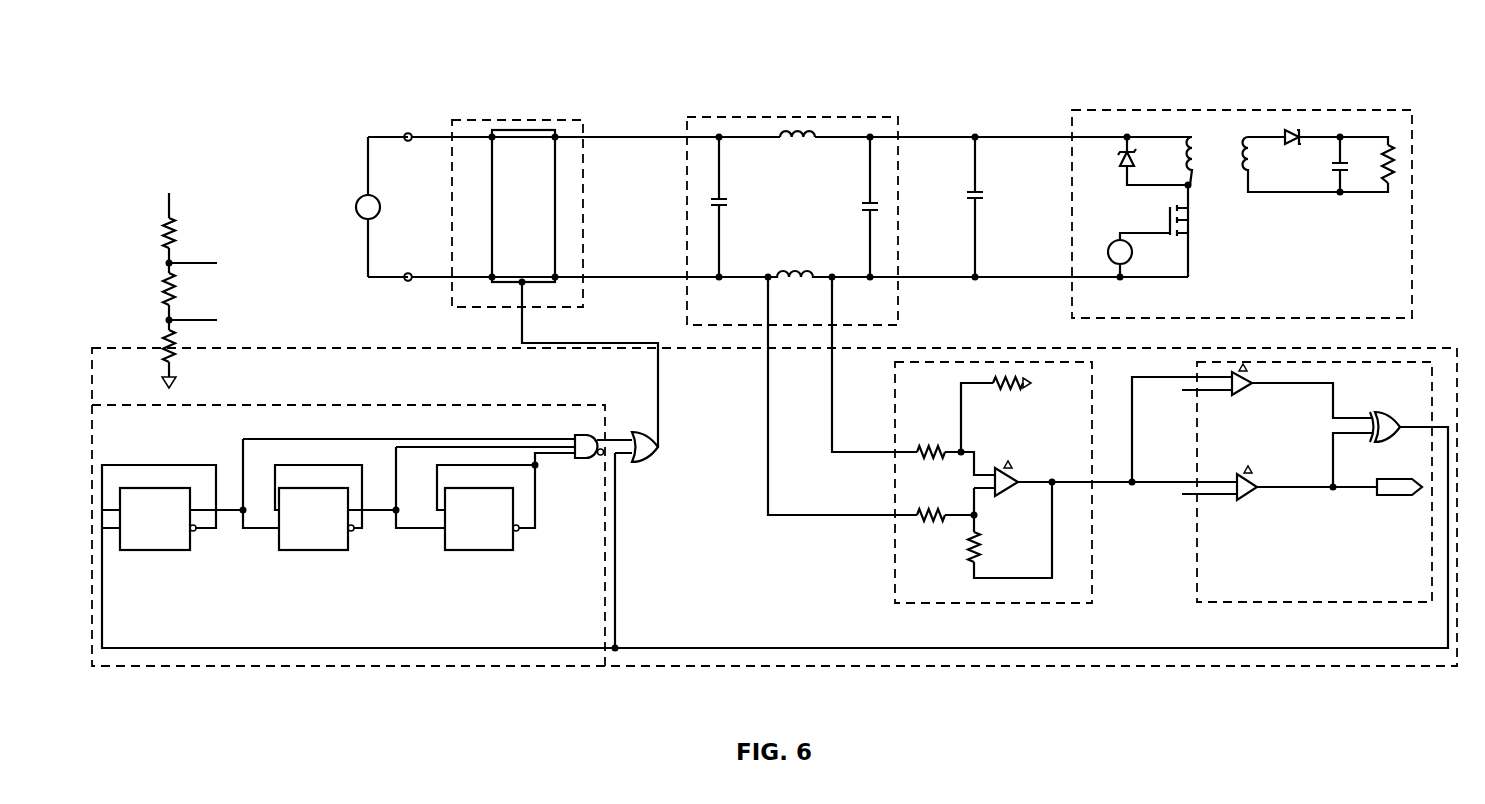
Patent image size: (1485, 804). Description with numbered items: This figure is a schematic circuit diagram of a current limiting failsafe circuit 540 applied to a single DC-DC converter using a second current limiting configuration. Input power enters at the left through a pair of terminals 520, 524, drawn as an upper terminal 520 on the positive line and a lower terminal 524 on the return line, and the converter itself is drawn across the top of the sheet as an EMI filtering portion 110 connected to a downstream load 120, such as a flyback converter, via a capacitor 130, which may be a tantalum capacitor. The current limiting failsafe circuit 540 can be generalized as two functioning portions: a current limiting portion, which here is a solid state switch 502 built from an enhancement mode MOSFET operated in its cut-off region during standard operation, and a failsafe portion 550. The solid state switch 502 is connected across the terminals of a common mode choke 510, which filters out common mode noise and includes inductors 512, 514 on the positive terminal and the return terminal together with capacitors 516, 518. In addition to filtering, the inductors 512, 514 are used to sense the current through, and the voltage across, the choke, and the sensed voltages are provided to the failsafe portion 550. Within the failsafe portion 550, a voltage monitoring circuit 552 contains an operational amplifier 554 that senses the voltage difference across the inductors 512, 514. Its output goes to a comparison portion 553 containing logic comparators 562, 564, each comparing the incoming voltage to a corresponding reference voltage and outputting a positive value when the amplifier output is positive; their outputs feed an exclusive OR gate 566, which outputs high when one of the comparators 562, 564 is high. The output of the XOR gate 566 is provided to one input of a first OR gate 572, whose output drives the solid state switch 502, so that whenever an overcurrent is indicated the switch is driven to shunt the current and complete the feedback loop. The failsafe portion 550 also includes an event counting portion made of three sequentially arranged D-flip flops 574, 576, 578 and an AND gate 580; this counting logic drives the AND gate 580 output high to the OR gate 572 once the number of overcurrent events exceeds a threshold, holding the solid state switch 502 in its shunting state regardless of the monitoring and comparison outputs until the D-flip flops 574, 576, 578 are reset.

The EMI filtering portion 110 is at (1245, 199).
The downstream load 120 is at (1290, 110).
The capacitor 130 is at (978, 190).
The solid state switch 502 is at (492, 215).
The common mode choke 510 is at (812, 117).
The inductor 512 is at (790, 135).
The inductor 514 is at (812, 270).
The capacitor 516 is at (716, 196).
The capacitor 518 is at (872, 200).
The input terminal 520 is at (408, 133).
The input terminal 524 is at (408, 281).
The current limiting failsafe circuit 540 is at (290, 347).
The failsafe portion 550 is at (562, 667).
The voltage monitoring circuit 552 is at (949, 482).
The comparison portion 553 is at (1329, 444).
The operational amplifier 554 is at (1008, 492).
The logic comparator 562 is at (1245, 398).
The logic comparator 564 is at (1250, 503).
The exclusive OR gate 566 is at (1385, 412).
The first OR gate 572 is at (645, 464).
The D-flip flop 574 is at (155, 553).
The D-flip flop 576 is at (312, 553).
The D-flip flop 578 is at (478, 552).
The AND gate 580 is at (580, 462).